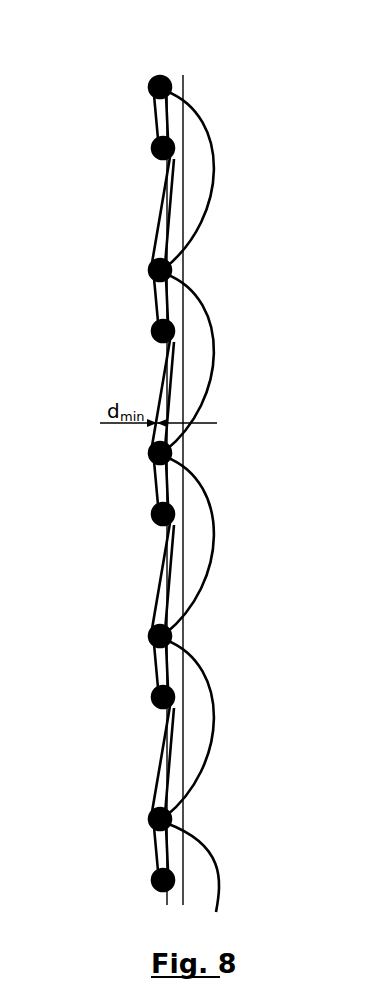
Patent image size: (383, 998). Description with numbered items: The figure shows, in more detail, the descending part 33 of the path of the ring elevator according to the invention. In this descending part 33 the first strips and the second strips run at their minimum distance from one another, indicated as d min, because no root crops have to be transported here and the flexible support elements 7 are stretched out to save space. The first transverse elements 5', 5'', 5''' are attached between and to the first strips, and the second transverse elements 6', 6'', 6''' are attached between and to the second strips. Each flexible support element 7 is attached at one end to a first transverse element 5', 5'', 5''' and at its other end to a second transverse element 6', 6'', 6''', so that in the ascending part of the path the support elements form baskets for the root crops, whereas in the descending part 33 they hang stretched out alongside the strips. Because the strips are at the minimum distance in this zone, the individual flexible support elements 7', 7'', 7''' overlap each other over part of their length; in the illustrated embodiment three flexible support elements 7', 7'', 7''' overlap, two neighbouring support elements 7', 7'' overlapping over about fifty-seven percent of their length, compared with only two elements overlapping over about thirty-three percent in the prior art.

The first transverse element 5' is at (105, 542).
The first transverse element 5'' is at (104, 673).
The first transverse element 5''' is at (102, 852).
The second transverse element 6' is at (217, 86).
The second transverse element 6'' is at (221, 264).
The second transverse element 6''' is at (230, 459).
The flexible support elements 7 is at (221, 356).
The flexible support element 7' is at (233, 179).
The flexible support element 7'' is at (240, 362).
The flexible support element 7''' is at (239, 545).
The descending part 33 is at (232, 592).